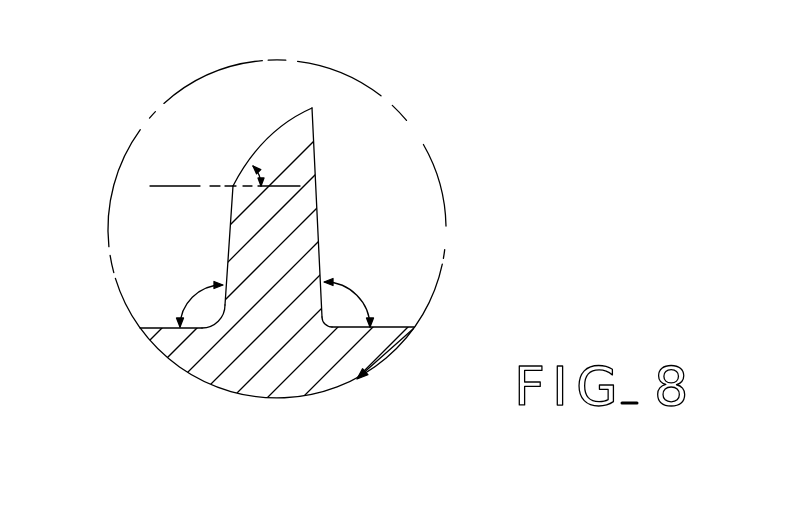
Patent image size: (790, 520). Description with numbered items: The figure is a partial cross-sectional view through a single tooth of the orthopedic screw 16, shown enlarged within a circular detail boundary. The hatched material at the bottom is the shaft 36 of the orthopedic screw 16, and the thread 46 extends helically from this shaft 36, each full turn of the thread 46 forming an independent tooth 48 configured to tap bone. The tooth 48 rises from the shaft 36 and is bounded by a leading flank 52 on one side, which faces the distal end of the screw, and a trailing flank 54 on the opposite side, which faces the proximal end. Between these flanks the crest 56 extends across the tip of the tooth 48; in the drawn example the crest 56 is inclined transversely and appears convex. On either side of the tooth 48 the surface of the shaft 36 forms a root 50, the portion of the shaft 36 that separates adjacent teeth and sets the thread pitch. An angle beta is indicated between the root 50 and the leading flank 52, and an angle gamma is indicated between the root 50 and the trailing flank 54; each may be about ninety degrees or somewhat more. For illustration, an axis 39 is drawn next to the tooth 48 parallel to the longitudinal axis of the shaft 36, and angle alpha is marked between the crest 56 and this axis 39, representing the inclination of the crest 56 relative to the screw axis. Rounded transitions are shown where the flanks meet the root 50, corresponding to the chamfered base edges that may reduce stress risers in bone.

The orthopedic screw 16 is at (430, 94).
The shaft 36 is at (240, 380).
The axis 39 is at (192, 186).
The thread 46 is at (272, 174).
The tooth 48 is at (288, 247).
The root 50 is at (158, 328).
The leading flank 52 is at (229, 230).
The trailing flank 54 is at (319, 212).
The crest 56 is at (260, 142).